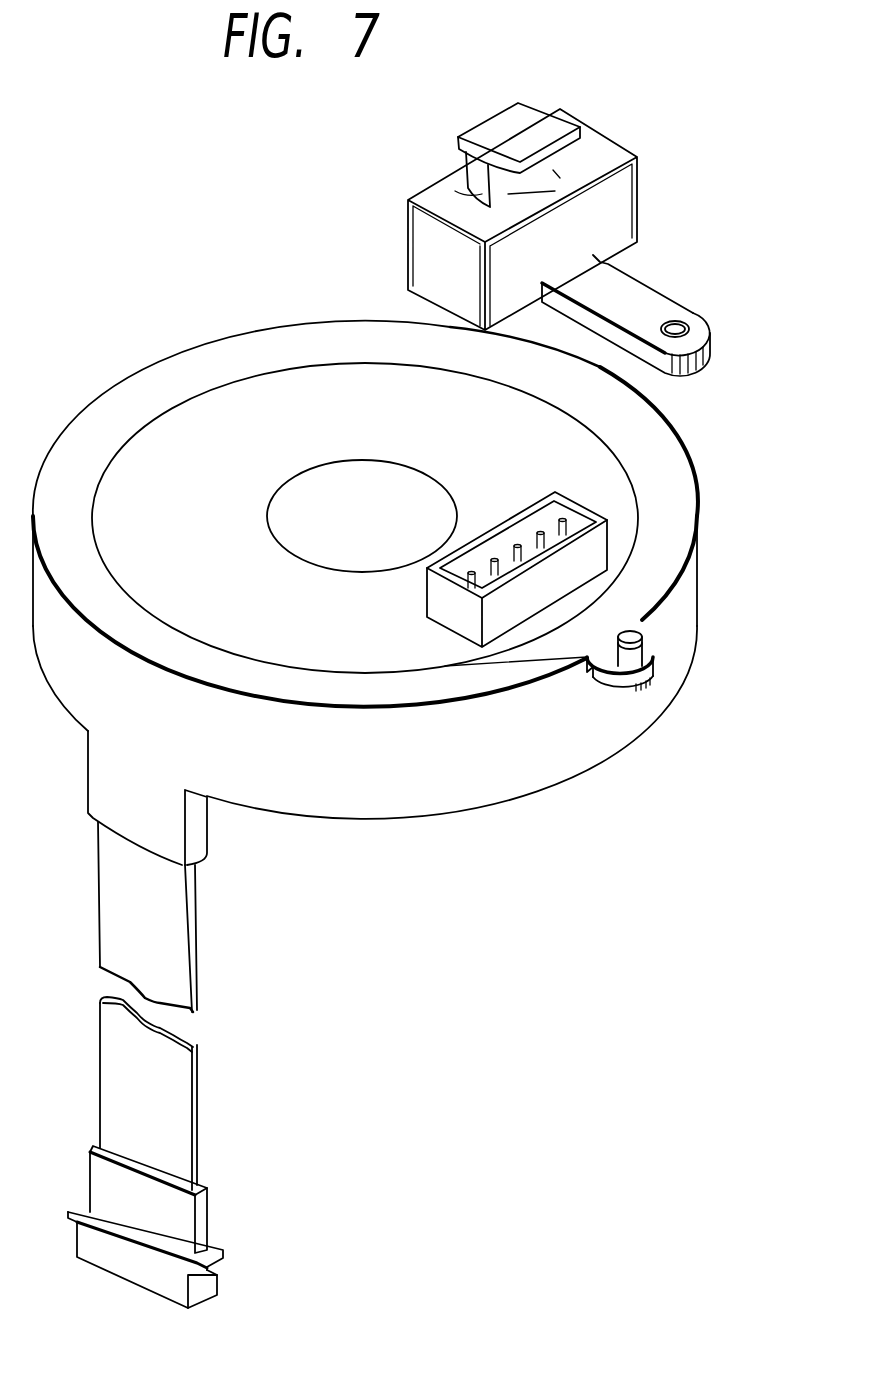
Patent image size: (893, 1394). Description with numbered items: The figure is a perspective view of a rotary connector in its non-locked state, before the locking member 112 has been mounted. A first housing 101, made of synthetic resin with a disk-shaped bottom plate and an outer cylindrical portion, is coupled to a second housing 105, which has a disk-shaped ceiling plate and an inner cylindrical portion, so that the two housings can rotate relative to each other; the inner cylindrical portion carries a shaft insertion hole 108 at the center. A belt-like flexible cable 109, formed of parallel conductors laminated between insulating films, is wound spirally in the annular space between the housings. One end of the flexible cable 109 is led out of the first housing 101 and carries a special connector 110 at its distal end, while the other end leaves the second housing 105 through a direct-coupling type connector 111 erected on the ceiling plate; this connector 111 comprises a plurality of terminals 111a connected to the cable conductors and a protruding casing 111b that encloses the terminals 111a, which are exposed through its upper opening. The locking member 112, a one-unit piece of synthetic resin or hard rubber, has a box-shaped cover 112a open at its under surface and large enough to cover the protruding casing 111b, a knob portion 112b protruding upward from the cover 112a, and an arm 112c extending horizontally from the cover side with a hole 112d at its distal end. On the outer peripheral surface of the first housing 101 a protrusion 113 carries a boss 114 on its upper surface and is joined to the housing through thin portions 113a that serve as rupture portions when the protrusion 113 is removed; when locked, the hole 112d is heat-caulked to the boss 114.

The first housing 101 is at (451, 812).
The second housing 105 is at (197, 413).
The shaft insertion hole 108 is at (330, 477).
The flexible cable 109 is at (178, 957).
The special connector 110 is at (202, 1222).
The direct-coupling type connector 111 is at (637, 569).
The terminals 111a is at (565, 546).
The protruding casing 111b is at (596, 514).
The locking member 112 is at (553, 222).
The box-shaped cover 112a is at (422, 250).
The knob portion 112b is at (490, 128).
The arm 112c is at (637, 293).
The hole 112d is at (683, 312).
The protrusion 113 is at (653, 687).
The thin portions 113a is at (593, 678).
The boss 114 is at (644, 643).